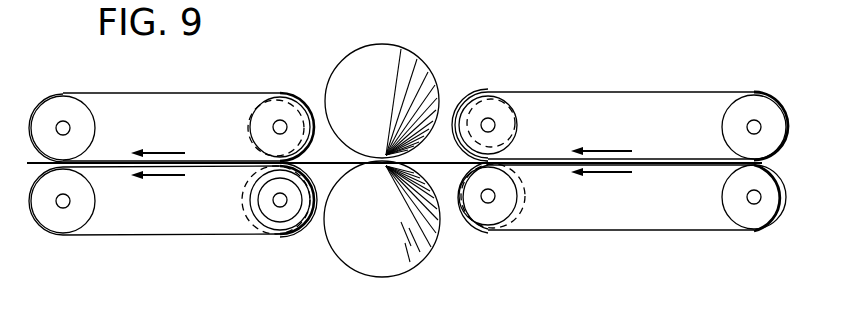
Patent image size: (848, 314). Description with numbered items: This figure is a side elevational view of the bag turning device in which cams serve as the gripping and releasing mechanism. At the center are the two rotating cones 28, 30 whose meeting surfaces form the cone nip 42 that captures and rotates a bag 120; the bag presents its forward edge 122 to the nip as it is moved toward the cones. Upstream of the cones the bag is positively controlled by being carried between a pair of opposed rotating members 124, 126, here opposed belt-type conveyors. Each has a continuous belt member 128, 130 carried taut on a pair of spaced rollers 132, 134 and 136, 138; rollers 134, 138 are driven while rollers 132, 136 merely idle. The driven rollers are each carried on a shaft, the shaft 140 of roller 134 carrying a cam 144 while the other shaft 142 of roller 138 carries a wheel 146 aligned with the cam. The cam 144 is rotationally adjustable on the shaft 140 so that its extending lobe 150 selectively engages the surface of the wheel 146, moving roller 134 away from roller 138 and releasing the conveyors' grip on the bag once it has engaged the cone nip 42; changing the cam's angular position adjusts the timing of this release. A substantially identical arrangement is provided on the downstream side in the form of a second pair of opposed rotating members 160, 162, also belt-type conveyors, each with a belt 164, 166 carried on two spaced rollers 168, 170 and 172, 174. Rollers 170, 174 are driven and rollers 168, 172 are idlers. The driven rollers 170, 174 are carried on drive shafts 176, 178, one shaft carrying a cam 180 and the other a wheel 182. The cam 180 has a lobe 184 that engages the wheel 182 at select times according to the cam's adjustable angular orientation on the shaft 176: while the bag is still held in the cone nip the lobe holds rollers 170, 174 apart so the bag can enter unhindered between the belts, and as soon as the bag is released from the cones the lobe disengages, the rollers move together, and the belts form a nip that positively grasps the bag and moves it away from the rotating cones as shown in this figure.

The cone 28 is at (400, 53).
The cone 30 is at (379, 276).
The cone nip 42 is at (330, 145).
The bag 120 is at (682, 158).
The forward edge 122 is at (612, 160).
The rotating member 124 is at (755, 86).
The rotating member 126 is at (776, 237).
The continuous belt member 128 is at (547, 91).
The continuous belt member 130 is at (566, 231).
The idler roller 132 is at (765, 112).
The driven roller 134 is at (498, 102).
The idler roller 136 is at (776, 192).
The driven roller 138 is at (495, 222).
The shaft 140 is at (496, 123).
The lower roller shaft 142 is at (496, 196).
The cam 144 is at (483, 103).
The wheel 146 is at (456, 204).
The lobe 150 is at (456, 138).
The rotating member 160 is at (42, 86).
The rotating member 162 is at (68, 248).
The belt 164 is at (117, 93).
The belt 166 is at (139, 235).
The idler roller 168 is at (84, 127).
The driven roller 170 is at (280, 125).
The idler roller 172 is at (56, 216).
The driven roller 174 is at (279, 229).
The drive shaft 176 is at (262, 108).
The drive shaft 178 is at (279, 200).
The cam 180 is at (254, 104).
The wheel 182 is at (301, 236).
The lobe 184 is at (240, 138).